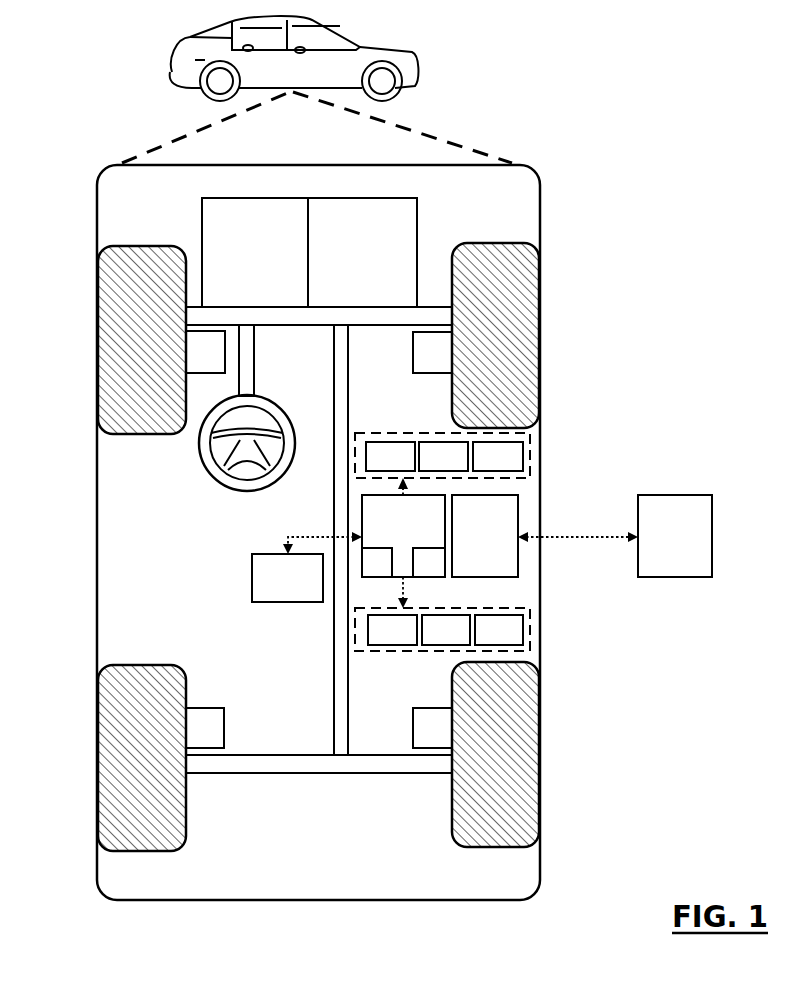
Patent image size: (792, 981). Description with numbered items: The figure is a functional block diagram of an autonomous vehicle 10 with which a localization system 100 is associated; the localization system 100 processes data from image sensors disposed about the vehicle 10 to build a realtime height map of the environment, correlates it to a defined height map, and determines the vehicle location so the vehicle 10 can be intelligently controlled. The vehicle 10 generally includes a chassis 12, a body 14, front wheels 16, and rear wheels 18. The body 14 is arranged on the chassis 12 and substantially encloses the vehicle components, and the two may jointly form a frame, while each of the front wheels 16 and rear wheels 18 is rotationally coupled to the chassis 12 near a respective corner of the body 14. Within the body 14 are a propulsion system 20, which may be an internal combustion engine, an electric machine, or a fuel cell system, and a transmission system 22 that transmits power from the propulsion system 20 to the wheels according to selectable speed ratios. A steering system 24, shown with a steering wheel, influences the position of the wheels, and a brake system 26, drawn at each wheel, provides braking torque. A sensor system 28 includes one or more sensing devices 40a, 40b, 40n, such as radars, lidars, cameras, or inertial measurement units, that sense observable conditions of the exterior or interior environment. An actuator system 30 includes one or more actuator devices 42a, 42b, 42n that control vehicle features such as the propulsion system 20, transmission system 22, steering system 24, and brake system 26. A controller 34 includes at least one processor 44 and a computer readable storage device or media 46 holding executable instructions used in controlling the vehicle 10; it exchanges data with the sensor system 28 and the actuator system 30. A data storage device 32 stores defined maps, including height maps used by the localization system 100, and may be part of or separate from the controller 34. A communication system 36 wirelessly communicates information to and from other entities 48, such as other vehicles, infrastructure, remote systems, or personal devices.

The vehicle 10 is at (176, 70).
The localization system 100 is at (566, 174).
The chassis 12 is at (333, 692).
The body 14 is at (95, 518).
The front wheels 16 is at (140, 246).
The rear wheels 18 is at (157, 851).
The propulsion system 20 is at (243, 264).
The transmission system 22 is at (350, 264).
The steering system 24 is at (280, 352).
The brake system 26 is at (193, 363).
The sensor system 28 is at (390, 433).
The actuator system 30 is at (400, 653).
The data storage device 32 is at (275, 589).
The controller 34 is at (391, 548).
The communication system 36 is at (473, 548).
The sensing device 40a is at (408, 468).
The sensing device 40b is at (461, 468).
The sensing device 40n is at (516, 468).
The actuator device 42a is at (410, 641).
The actuator device 42b is at (464, 641).
The actuator device 42n is at (517, 641).
The processor 44 is at (366, 574).
The computer readable storage device or media 46 is at (418, 574).
The other entities 48 is at (663, 548).